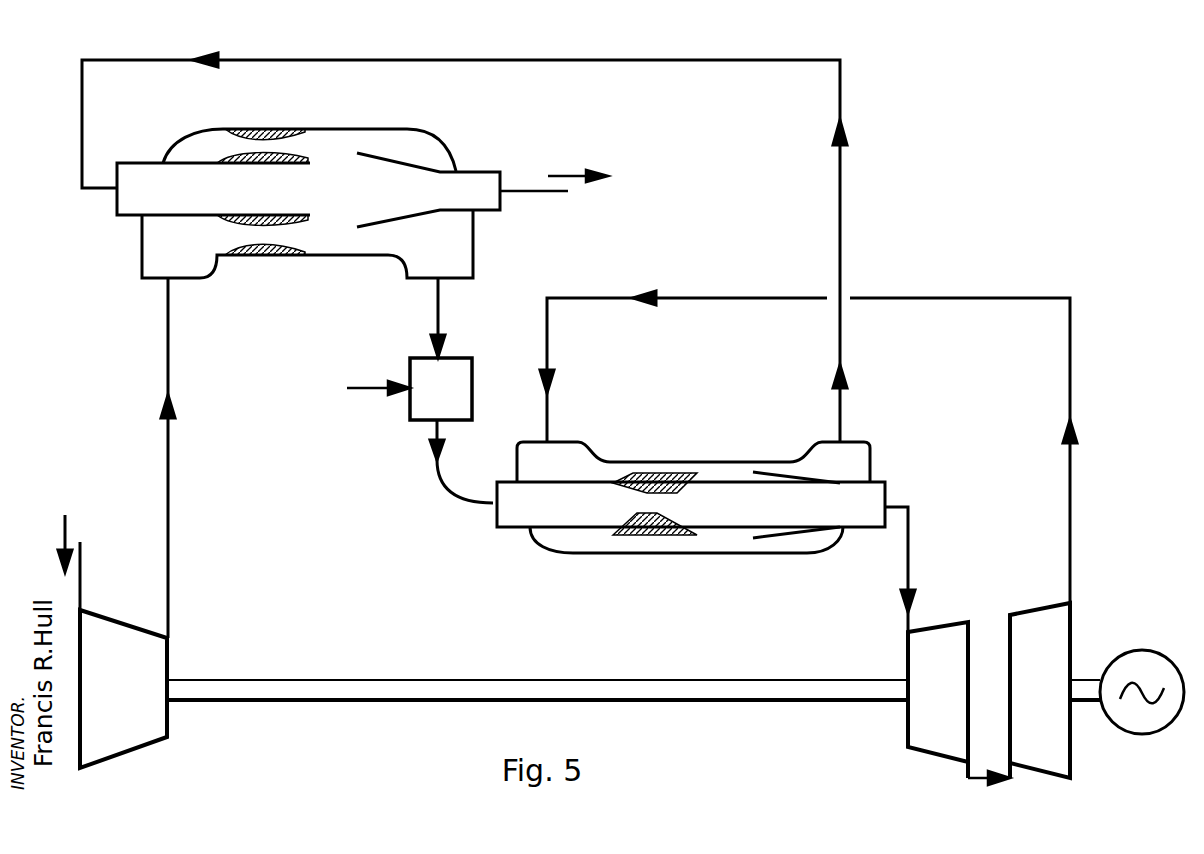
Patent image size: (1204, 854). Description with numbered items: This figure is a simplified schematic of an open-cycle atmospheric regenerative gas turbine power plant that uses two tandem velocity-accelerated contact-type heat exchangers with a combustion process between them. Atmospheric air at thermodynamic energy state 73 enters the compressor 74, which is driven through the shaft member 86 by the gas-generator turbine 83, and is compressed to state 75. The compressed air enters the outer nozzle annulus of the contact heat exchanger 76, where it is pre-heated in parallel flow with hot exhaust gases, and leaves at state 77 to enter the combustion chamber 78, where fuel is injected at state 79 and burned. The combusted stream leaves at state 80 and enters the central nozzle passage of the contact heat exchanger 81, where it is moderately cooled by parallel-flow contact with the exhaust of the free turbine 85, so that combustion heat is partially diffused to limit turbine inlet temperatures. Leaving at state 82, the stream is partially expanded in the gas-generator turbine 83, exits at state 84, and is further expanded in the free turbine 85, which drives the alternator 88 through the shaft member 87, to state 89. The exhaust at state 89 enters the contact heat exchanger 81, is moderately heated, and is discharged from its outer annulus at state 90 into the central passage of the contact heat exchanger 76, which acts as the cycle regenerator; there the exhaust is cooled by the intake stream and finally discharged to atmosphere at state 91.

The thermodynamic energy state of atmospheric air 73 is at (75, 583).
The compressor 74 is at (137, 705).
The thermodynamic energy state of compressed intake air 75 is at (163, 563).
The contact heat exchanger 76 is at (327, 255).
The thermodynamic energy state of pre-heated intake fluid 77 is at (435, 315).
The combustion chamber 78 is at (455, 408).
The thermodynamic energy state of injected fuel 79 is at (373, 395).
The thermodynamic energy state of combusted fluid 80 is at (433, 437).
The contact heat exchanger 81 is at (690, 553).
The thermodynamic energy state of cooled combusted fluid 82 is at (903, 572).
The gas-generator turbine 83 is at (946, 711).
The thermodynamic energy state of partly expanded fluid 84 is at (982, 775).
The free turbine 85 is at (1051, 711).
The shaft member 86 is at (375, 678).
The shaft member 87 is at (1083, 683).
The alternator 88 is at (1143, 653).
The thermodynamic energy state of turbine exhaust gas 89 is at (543, 352).
The thermodynamic energy state of heated exhaust gas 90 is at (382, 67).
The thermodynamic energy state of discharged exhaust gas 91 is at (523, 183).